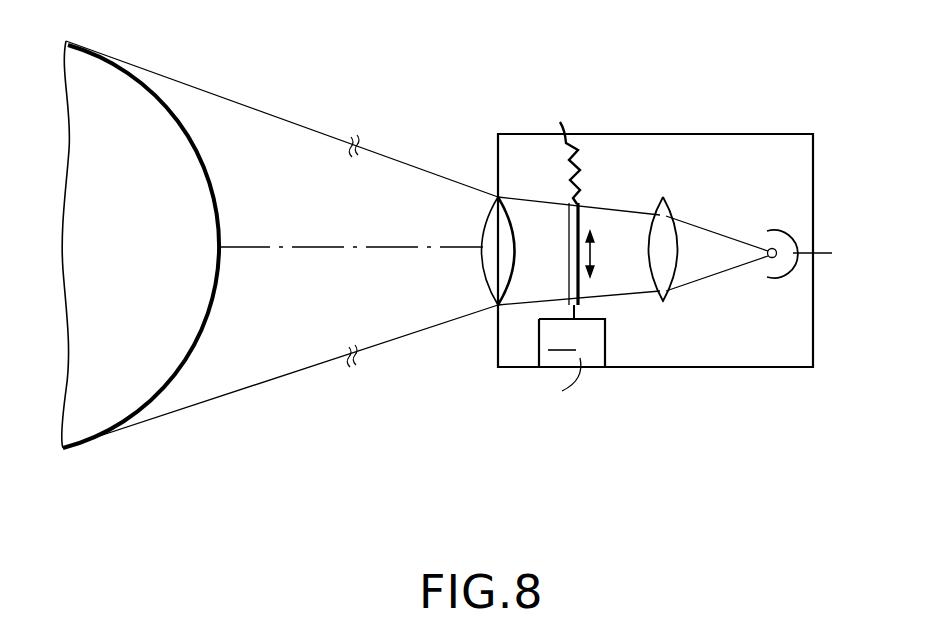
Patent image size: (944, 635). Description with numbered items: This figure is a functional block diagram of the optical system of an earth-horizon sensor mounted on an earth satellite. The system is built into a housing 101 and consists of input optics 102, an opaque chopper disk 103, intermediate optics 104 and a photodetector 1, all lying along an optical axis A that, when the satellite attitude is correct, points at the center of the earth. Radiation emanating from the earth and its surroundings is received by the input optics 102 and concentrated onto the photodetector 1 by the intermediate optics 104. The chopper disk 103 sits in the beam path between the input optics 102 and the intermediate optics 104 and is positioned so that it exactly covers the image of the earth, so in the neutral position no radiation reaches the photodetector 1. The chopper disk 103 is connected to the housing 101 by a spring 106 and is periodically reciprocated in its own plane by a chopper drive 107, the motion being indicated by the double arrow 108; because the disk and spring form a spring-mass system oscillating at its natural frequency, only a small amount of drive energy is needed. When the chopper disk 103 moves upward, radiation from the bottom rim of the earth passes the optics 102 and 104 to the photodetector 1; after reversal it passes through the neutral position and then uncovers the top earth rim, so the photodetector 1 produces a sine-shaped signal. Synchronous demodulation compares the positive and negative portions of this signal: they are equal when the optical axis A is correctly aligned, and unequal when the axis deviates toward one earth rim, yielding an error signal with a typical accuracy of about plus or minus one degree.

The photodetector 1 is at (789, 238).
The housing 101 is at (742, 369).
The input optics 102 is at (491, 302).
The chopper disk 103 is at (582, 205).
The intermediate optics 104 is at (664, 197).
The spring 106 is at (548, 155).
The chopper drive 107 is at (539, 367).
The double arrow 108 is at (591, 250).
The optical axis A is at (253, 255).